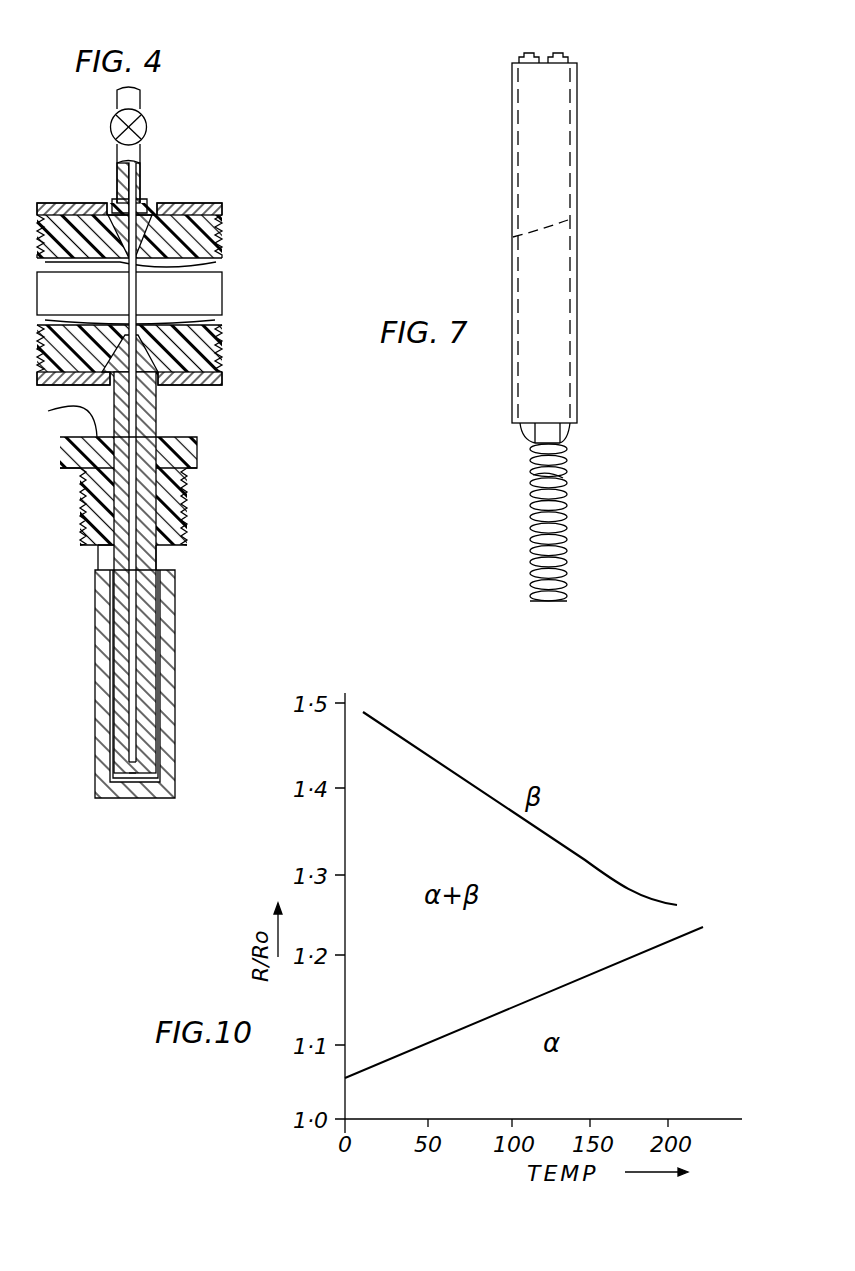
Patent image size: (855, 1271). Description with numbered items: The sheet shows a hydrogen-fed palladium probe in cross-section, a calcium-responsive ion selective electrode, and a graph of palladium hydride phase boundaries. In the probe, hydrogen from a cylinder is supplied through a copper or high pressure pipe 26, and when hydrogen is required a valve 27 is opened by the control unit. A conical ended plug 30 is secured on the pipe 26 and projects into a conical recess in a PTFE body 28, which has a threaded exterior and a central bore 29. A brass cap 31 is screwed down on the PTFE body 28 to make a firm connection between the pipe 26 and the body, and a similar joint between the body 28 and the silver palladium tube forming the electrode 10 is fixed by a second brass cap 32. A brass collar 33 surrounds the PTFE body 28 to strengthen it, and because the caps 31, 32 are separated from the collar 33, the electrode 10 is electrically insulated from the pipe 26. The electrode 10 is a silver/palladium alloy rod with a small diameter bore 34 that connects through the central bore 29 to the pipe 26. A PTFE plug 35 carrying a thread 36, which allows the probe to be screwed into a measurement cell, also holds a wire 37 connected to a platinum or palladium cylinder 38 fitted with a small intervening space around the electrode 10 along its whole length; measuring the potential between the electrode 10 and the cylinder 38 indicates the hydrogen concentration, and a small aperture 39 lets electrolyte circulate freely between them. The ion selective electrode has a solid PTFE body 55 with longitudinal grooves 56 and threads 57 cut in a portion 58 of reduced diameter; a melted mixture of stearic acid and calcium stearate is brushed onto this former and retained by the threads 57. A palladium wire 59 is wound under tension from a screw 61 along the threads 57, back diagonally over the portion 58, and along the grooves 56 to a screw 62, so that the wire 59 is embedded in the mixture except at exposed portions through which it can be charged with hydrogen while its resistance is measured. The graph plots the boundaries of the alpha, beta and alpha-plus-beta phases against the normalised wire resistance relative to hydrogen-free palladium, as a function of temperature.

In FIG. 4, the electrode 10 is at (157, 559).
In FIG. 4, the pipe 26 is at (141, 158).
In FIG. 4, the valve 27 is at (146, 125).
In FIG. 4, the PTFE body 28 is at (212, 233).
In FIG. 4, the central bore 29 is at (133, 298).
In FIG. 4, the conical ended plug 30 is at (150, 218).
In FIG. 4, the brass cap 31 is at (203, 205).
In FIG. 4, the brass cap 32 is at (205, 385).
In FIG. 4, the brass collar 33 is at (200, 282).
In FIG. 4, the bore 34 is at (134, 622).
In FIG. 4, the PTFE plug 35 is at (197, 453).
In FIG. 4, the thread 36 is at (183, 506).
In FIG. 4, the wire 37 is at (55, 419).
In FIG. 4, the cylinder 38 is at (172, 681).
In FIG. 4, the aperture 39 is at (136, 798).
In FIG. 7, the PTFE body 55 is at (526, 140).
In FIG. 7, the longitudinal grooves 56 is at (510, 238).
In FIG. 7, the threads 57 is at (530, 547).
In FIG. 7, the portion of reduced diameter 58 is at (540, 435).
In FIG. 7, the palladium wire 59 is at (533, 474).
In FIG. 7, the screw 61 is at (527, 53).
In FIG. 7, the screw 62 is at (558, 53).